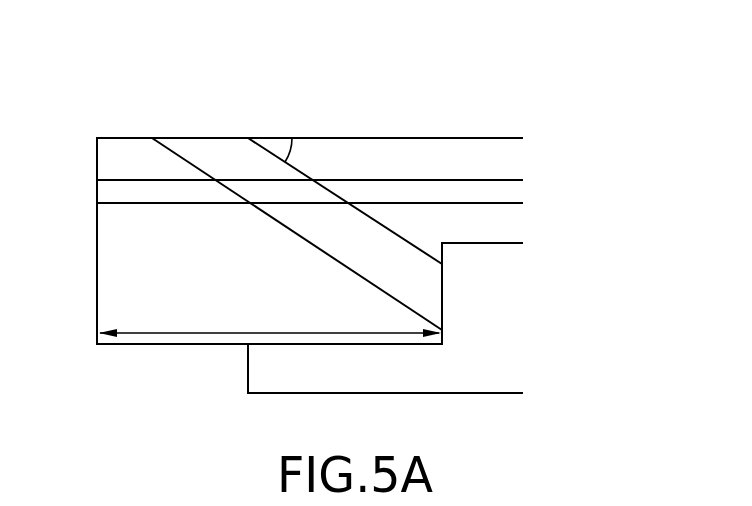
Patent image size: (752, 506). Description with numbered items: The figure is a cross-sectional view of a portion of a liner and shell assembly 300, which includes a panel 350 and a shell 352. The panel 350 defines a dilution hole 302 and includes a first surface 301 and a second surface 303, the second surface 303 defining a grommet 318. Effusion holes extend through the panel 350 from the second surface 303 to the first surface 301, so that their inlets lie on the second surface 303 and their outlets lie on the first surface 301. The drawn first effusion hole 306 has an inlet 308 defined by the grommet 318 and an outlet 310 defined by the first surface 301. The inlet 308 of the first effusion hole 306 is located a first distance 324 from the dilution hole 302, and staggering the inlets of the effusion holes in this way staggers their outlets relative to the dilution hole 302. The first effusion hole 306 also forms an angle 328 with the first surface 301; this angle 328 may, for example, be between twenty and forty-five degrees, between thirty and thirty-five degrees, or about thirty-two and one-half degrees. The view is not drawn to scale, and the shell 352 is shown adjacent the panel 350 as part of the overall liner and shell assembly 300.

The liner and shell assembly 300 is at (532, 79).
The first surface 301 is at (413, 138).
The dilution hole 302 is at (62, 288).
The second surface 303 is at (512, 243).
The first effusion hole 306 is at (322, 223).
The inlet 308 is at (442, 300).
The outlet 310 is at (205, 138).
The grommet 318 is at (442, 253).
The first distance 324 is at (238, 333).
The angle 328 is at (298, 158).
The panel 350 is at (602, 178).
The shell 352 is at (463, 375).